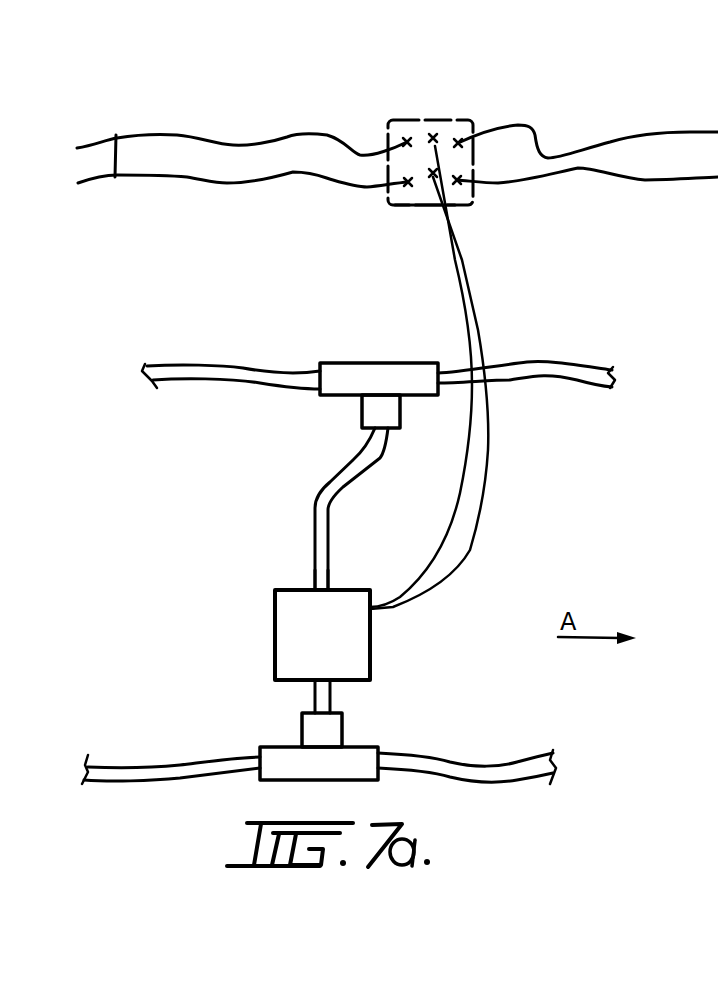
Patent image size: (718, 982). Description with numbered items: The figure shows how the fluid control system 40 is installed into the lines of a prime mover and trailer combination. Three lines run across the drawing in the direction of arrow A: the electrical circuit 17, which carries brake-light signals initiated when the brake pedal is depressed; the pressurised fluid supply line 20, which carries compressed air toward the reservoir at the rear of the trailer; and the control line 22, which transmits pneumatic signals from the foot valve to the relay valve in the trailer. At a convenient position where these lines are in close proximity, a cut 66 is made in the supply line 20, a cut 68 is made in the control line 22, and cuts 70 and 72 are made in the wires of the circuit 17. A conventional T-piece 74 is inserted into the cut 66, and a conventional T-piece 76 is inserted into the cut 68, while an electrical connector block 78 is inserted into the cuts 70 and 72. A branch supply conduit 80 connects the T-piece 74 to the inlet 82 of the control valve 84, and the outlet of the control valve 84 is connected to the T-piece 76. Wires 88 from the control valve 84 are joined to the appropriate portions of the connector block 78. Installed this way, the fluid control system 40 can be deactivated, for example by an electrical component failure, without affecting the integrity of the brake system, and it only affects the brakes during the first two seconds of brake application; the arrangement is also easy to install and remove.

The electrical circuit 17 is at (113, 140).
The pressurised fluid supply line 20 is at (177, 365).
The control line 22 is at (118, 777).
The fluid control system 40 is at (190, 545).
The cut in supply line 66 is at (312, 368).
The cut in control line 68 is at (260, 750).
The cut in electric circuit 70 is at (400, 118).
The cut in electric circuit 72 is at (410, 208).
The T-piece 74 is at (338, 400).
The T-piece 76 is at (345, 757).
The electrical connector block 78 is at (443, 122).
The branch supply conduit 80 is at (335, 472).
The inlet 82 is at (315, 588).
The control valve 84 is at (298, 620).
The wires 88 is at (455, 513).